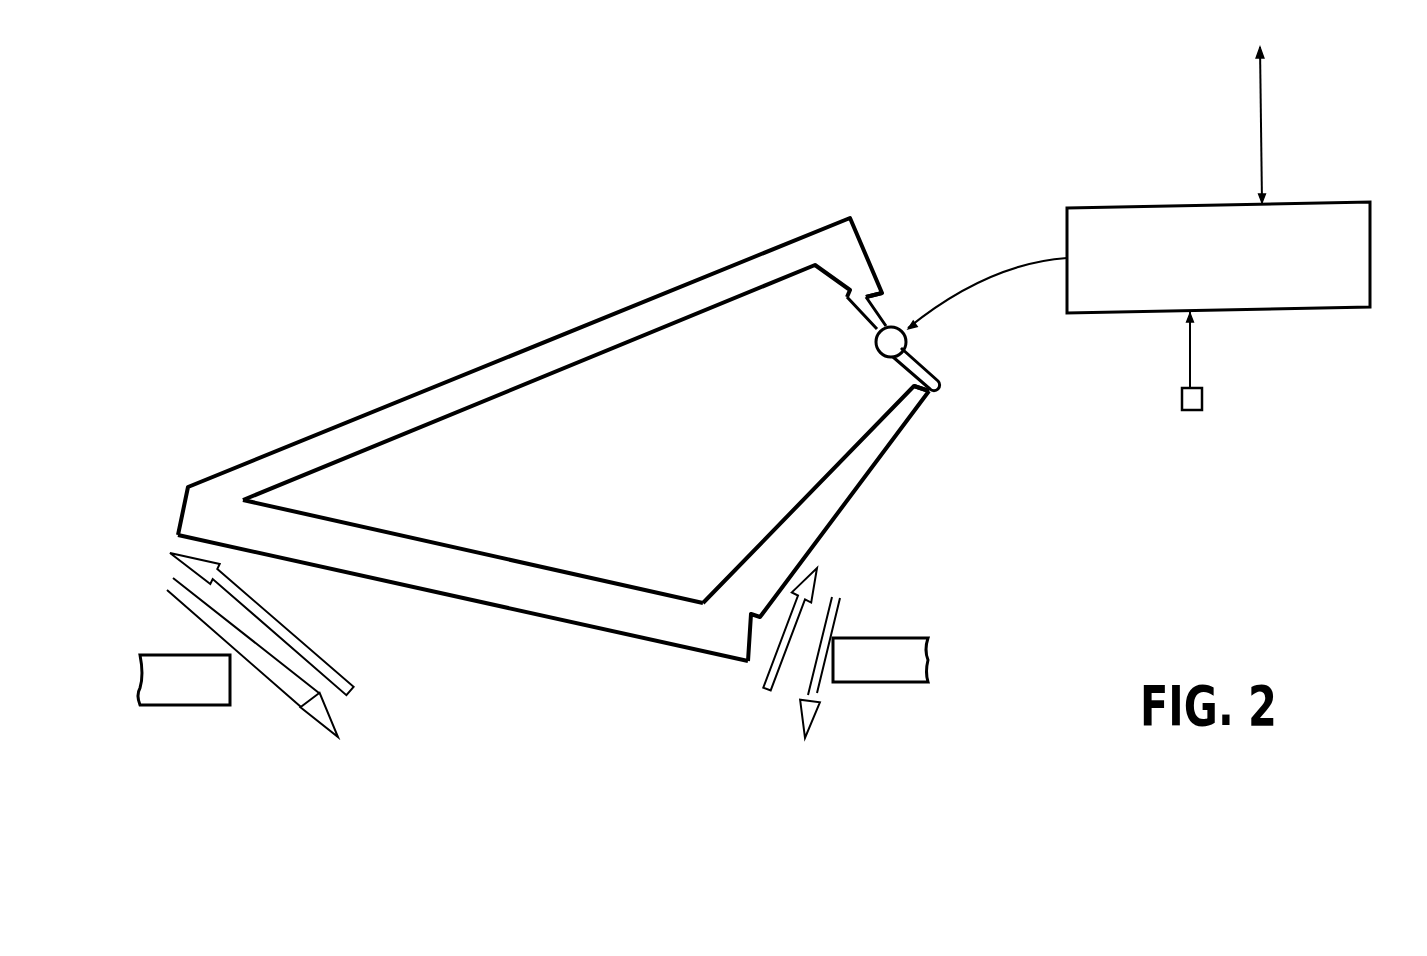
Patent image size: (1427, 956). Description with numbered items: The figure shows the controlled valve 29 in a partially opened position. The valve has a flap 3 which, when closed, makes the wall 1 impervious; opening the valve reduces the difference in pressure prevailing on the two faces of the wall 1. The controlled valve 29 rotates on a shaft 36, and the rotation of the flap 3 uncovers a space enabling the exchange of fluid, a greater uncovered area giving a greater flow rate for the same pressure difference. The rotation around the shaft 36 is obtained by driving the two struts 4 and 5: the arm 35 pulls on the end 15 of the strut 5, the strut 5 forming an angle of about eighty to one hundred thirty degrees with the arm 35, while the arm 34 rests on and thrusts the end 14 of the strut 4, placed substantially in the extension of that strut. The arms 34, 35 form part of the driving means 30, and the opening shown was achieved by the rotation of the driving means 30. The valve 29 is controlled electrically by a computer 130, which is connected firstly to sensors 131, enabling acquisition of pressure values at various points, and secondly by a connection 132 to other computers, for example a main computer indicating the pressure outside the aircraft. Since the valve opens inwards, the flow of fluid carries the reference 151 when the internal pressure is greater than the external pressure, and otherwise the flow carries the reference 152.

The wall 1 is at (192, 705).
The flap 3 is at (502, 612).
The strut 4 is at (855, 495).
The strut 5 is at (652, 297).
The end of the strut 14 is at (927, 402).
The end of the strut 15 is at (881, 282).
The controlled valve 29 is at (597, 652).
The driving means 30 is at (913, 340).
The arm 34 is at (927, 368).
The arm 35 is at (848, 306).
The shaft 36 is at (891, 346).
The computer 130 is at (1371, 232).
The sensors 131 is at (1202, 402).
The connection 132 is at (1263, 125).
The flow 151 is at (277, 683).
The flow of fluid 152 is at (317, 650).